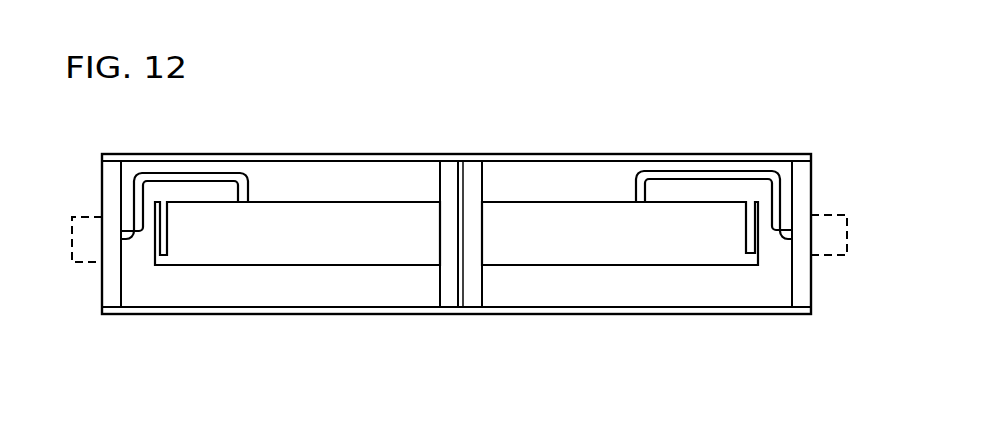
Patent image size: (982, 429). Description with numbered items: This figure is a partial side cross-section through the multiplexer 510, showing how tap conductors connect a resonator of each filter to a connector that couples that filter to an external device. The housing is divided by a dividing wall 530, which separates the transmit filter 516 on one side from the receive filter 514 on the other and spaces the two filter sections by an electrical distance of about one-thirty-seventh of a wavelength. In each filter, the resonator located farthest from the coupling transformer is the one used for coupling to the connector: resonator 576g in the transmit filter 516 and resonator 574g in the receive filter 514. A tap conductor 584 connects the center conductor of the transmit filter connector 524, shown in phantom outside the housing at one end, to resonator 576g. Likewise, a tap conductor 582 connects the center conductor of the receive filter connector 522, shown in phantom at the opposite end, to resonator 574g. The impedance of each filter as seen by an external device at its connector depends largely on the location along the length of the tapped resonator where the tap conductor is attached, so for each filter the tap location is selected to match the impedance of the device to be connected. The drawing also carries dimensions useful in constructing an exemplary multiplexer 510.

The multiplexer 510 is at (490, 143).
The dividing wall 530 is at (450, 278).
The resonator 576g is at (327, 202).
The resonator 574g is at (563, 202).
The tap conductor 584 is at (195, 173).
The tap conductor 582 is at (692, 171).
The transmit filter 516 is at (334, 296).
The receive filter 514 is at (715, 295).
The transmit filter connector 524 is at (72, 262).
The receive filter connector 522 is at (847, 255).